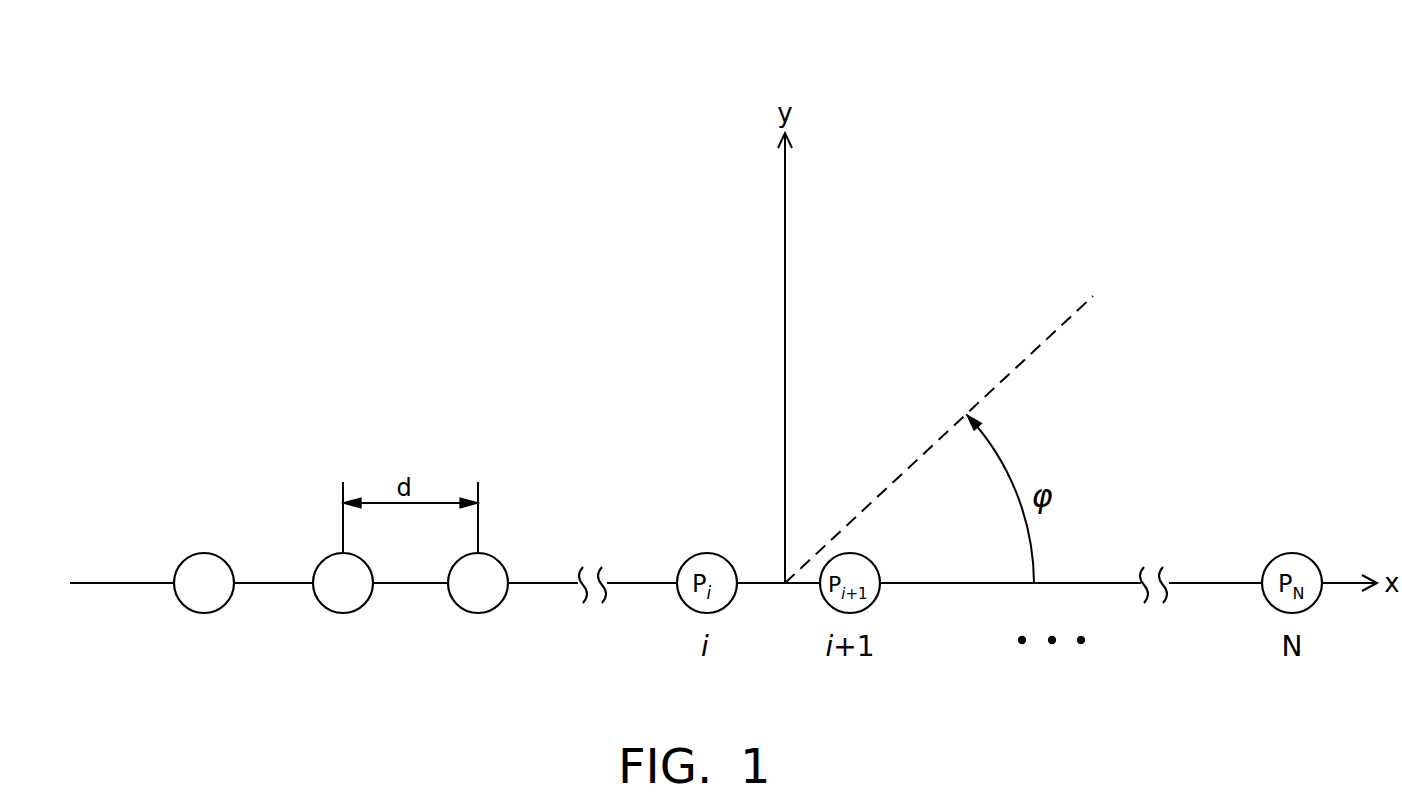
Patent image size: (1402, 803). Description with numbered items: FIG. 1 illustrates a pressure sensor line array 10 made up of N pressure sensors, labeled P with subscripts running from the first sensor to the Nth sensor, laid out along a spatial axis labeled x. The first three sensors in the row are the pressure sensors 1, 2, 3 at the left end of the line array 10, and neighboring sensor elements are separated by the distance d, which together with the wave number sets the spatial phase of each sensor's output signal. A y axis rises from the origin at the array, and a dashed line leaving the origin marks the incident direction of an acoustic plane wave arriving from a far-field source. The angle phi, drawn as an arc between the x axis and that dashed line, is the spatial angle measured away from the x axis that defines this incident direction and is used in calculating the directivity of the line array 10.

The line array 10 is at (1080, 206).
The first array element P1 1 is at (204, 608).
The second array element P2 2 is at (343, 608).
The third array element P3 3 is at (478, 608).